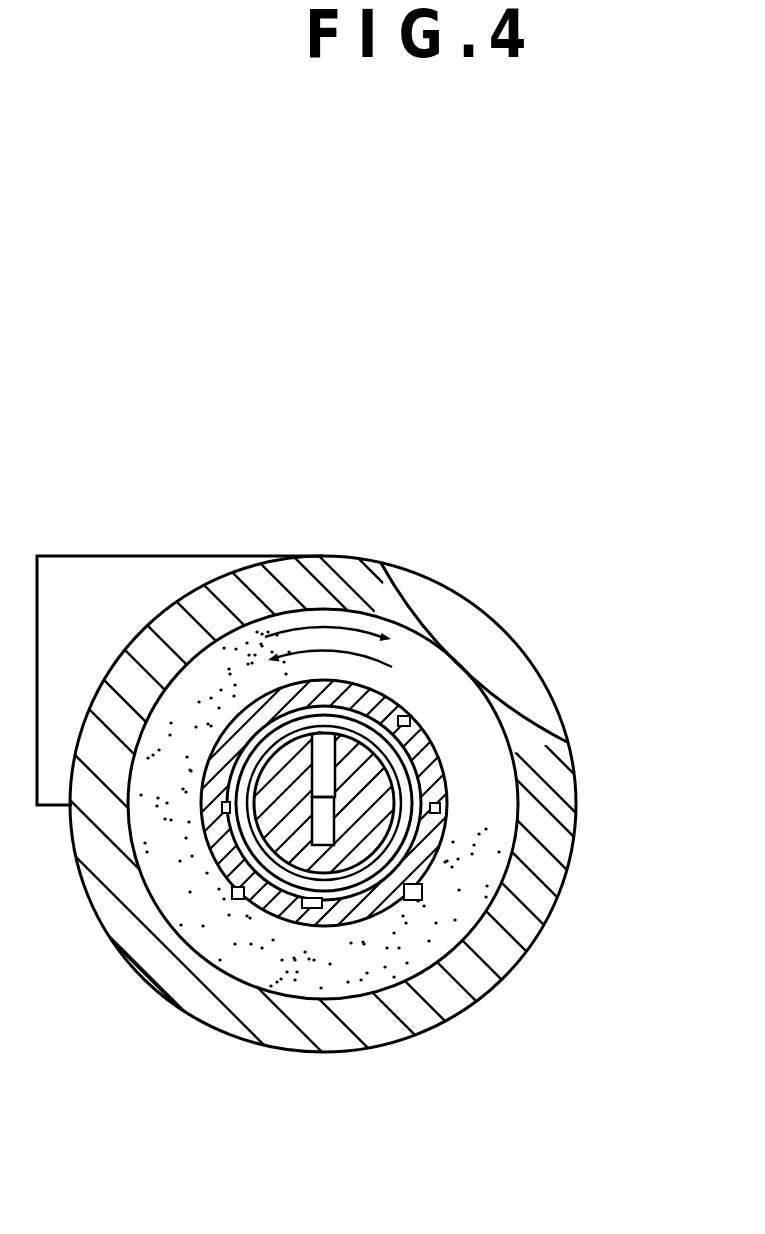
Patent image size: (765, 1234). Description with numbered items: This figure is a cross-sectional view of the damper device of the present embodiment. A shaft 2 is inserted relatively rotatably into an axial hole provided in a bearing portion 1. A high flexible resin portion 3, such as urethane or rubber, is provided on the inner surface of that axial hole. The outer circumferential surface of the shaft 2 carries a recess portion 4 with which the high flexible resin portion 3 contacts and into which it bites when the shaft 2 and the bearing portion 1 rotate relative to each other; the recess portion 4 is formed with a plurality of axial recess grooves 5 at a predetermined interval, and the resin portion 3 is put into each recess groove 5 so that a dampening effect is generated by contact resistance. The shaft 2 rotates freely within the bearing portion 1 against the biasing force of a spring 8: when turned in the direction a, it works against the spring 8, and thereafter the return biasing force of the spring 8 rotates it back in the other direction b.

The bearing portion 1 is at (462, 597).
The shaft 2 is at (441, 726).
The high flexible resin portion 3 is at (505, 771).
The recess portion 4 is at (424, 894).
The recess groove 5 is at (411, 892).
The spring 8 is at (320, 888).
The direction a is at (310, 623).
The direction b is at (399, 670).